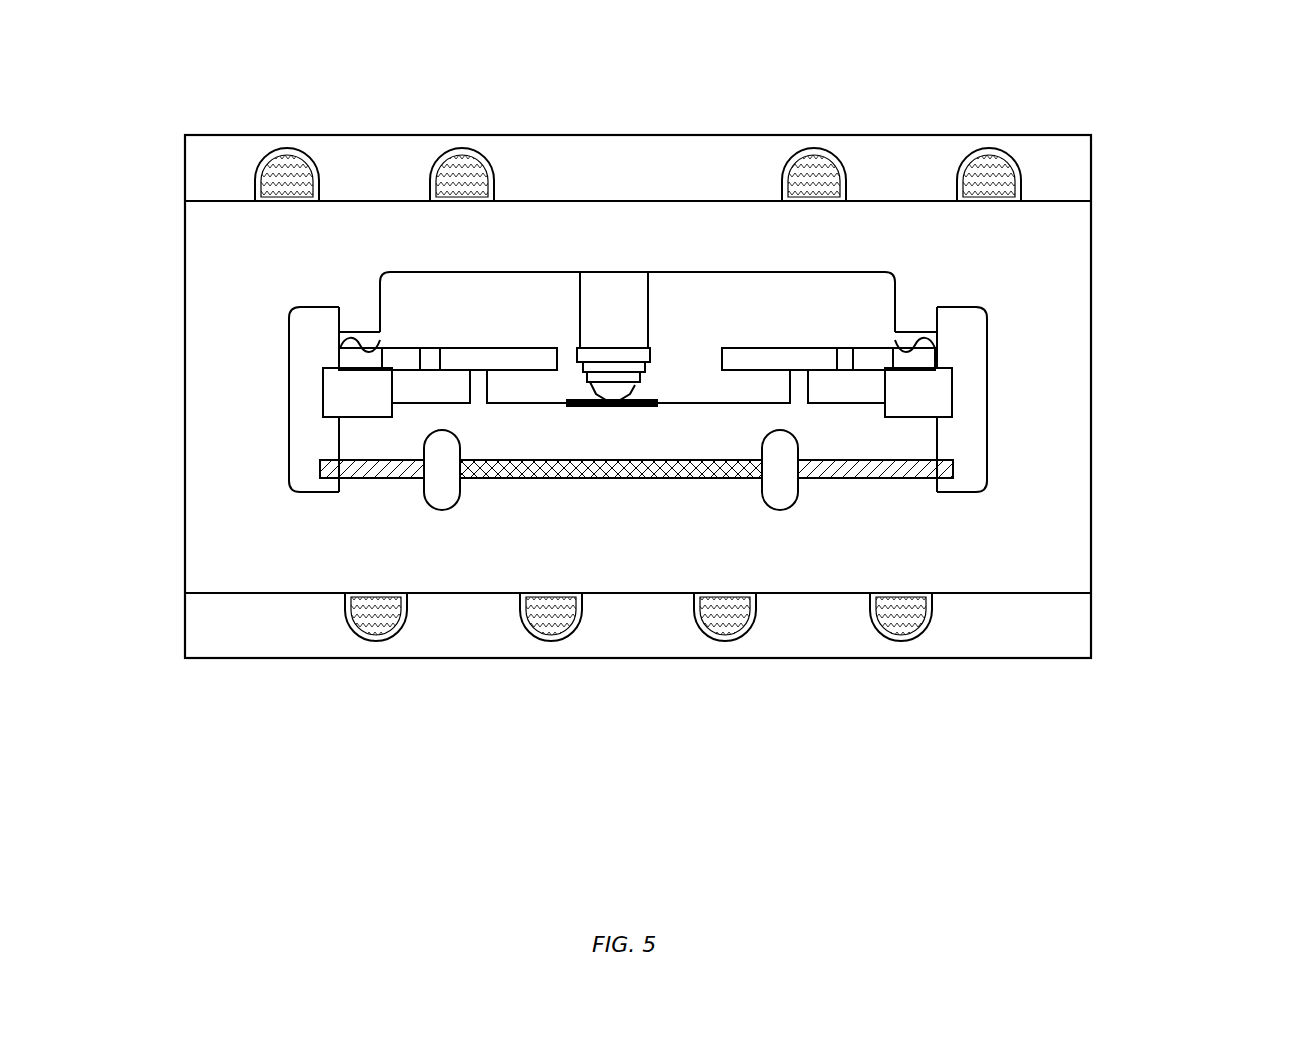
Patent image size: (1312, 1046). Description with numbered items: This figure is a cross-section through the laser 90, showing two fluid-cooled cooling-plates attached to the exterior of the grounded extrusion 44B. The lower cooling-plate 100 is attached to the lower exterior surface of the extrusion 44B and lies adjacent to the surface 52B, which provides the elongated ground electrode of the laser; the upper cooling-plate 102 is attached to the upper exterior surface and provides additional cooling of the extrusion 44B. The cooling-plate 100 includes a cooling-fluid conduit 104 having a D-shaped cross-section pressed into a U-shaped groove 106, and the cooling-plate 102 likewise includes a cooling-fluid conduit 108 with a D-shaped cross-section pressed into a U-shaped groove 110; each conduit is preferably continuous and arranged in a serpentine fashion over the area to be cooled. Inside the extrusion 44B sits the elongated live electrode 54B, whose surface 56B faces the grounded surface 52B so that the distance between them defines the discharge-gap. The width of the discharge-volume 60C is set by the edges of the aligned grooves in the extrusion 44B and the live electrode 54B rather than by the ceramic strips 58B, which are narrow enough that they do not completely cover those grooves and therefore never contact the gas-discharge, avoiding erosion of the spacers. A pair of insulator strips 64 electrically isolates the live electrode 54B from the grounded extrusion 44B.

The laser 90 is at (1130, 387).
The cooling-plate 100 is at (190, 627).
The cooling-plate 102 is at (190, 172).
The cooling-fluid conduit 104 is at (376, 642).
The U-shaped groove 106 is at (402, 595).
The cooling-fluid conduit 108 is at (460, 150).
The U-shaped groove 110 is at (432, 197).
The extrusion 44B is at (190, 387).
The surface 52B is at (650, 478).
The live electrode 54B is at (708, 407).
The surface 56B is at (490, 478).
The ceramic strips 58B is at (358, 478).
The discharge-volume 60C is at (598, 478).
The insulator strips 64 is at (332, 392).